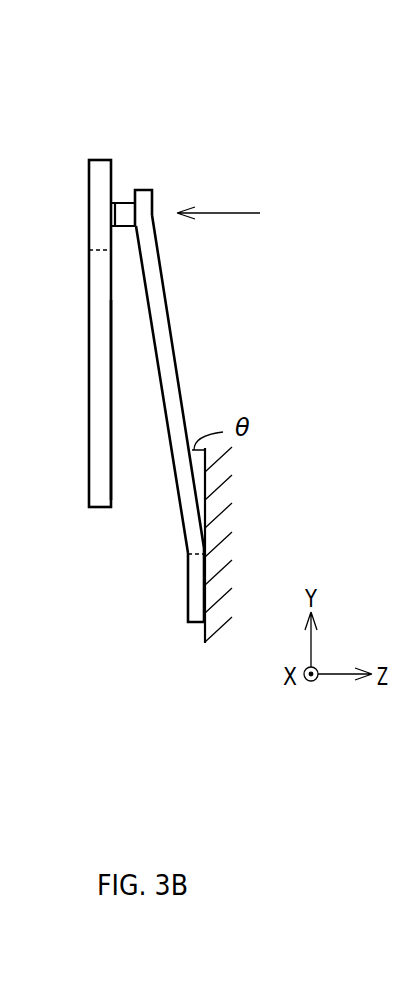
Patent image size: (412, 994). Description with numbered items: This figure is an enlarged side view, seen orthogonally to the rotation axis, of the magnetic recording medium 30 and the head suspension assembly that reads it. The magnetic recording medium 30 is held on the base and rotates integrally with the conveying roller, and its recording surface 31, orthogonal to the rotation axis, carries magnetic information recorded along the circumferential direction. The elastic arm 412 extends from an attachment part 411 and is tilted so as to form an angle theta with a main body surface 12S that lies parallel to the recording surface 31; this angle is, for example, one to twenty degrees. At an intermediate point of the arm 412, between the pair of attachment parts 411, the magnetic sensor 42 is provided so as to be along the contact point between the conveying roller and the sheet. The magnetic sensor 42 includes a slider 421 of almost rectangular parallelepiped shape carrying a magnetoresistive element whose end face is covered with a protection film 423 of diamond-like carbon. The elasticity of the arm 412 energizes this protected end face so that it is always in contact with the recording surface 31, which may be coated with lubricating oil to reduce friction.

The magnetic recording medium 30 is at (97, 172).
The recording surface 31 is at (112, 380).
The magnetic sensor 42 is at (178, 70).
The slider 421 is at (126, 210).
The protection film 423 is at (114, 205).
The arm 412 is at (167, 353).
The attachment part 411 is at (197, 590).
The main body surface 12S is at (203, 633).